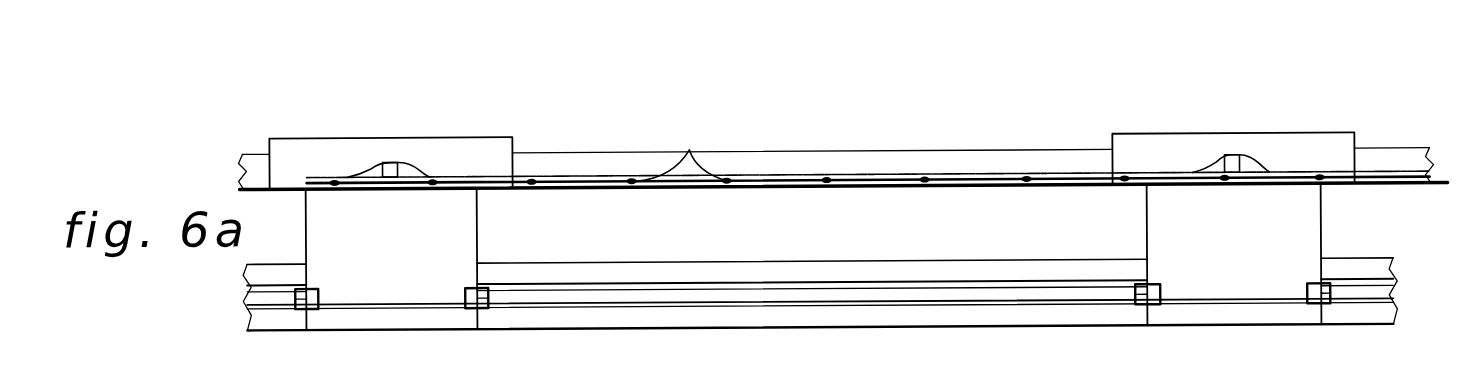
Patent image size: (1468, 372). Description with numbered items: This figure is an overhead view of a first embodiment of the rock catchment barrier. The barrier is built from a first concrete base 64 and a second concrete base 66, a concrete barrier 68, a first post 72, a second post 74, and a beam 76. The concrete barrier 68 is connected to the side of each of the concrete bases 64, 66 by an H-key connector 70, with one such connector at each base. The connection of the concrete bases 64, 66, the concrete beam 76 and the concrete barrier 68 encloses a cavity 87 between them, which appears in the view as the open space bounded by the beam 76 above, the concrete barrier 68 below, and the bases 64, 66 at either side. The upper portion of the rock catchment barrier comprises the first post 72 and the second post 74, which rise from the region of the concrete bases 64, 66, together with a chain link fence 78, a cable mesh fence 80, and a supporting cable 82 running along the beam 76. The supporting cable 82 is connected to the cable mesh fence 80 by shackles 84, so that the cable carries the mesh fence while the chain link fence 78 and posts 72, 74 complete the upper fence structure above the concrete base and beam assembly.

The first concrete base 64 is at (415, 138).
The second concrete base 66 is at (1233, 142).
The concrete barrier 68 is at (1032, 319).
The H-key connector 70 is at (463, 296).
The first post 72 is at (389, 160).
The second post 74 is at (1238, 164).
The beam 76 is at (825, 151).
The chain link fence 78 is at (417, 161).
The cable mesh fence 80 is at (550, 175).
The supporting cable 82 is at (600, 181).
The shackles 84 is at (690, 154).
The cavity 87 is at (895, 236).